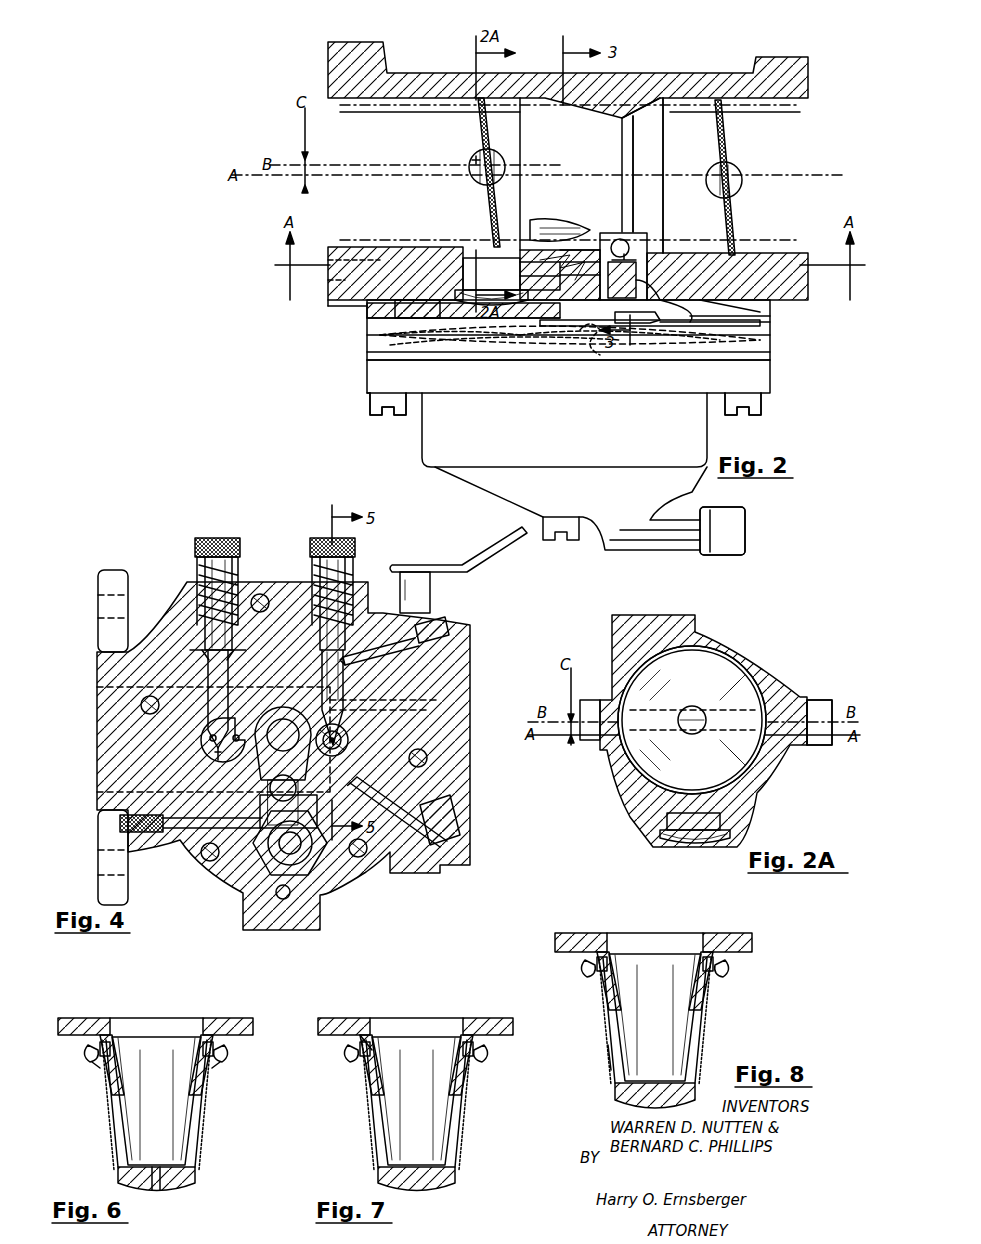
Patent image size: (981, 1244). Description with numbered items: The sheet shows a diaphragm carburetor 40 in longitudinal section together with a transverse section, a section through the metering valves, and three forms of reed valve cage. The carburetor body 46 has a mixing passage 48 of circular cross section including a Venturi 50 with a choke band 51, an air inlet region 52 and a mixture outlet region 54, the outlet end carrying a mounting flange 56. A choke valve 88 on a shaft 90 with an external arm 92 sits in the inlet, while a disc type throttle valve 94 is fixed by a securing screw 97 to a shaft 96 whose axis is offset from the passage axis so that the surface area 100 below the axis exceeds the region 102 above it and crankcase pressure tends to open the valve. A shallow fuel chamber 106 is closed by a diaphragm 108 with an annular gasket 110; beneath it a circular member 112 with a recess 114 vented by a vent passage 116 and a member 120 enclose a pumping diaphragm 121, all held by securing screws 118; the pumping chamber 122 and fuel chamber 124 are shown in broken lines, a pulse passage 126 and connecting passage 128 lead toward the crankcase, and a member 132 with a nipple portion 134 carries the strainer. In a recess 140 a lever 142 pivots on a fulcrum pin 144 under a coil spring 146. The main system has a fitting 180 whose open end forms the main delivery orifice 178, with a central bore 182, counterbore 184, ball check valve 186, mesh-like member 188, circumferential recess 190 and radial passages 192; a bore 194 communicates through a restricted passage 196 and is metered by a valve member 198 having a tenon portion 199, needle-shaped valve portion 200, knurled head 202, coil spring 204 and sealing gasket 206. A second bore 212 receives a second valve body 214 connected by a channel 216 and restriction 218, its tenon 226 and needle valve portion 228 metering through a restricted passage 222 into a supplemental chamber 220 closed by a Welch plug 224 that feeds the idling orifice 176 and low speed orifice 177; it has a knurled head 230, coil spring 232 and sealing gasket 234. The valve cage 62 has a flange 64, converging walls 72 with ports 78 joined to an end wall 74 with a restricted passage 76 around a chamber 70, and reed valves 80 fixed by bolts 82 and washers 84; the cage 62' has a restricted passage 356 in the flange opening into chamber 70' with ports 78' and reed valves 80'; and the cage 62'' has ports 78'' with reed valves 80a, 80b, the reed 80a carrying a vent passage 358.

In FIG. 2, the carburetor 40 is at (632, 62).
In FIG. 2, the carburetor body 46 is at (753, 65).
In FIG. 4, the carburetor body 46 is at (228, 890).
In FIG. 2A, the carburetor body 46 is at (670, 612).
In FIG. 2, the mixing passage 48 is at (608, 156).
In FIG. 2, the Venturi 50 is at (628, 135).
In FIG. 2, the choke band 51 is at (632, 160).
In FIG. 2, the air inlet region 52 is at (790, 136).
In FIG. 2, the mixture outlet region 54 is at (371, 152).
In FIG. 2, the mounting flange 56 is at (387, 58).
In FIG. 2, the choke valve 88 is at (738, 206).
In FIG. 2, the choke shaft 90 is at (740, 172).
In FIG. 4, the arm 92 is at (480, 548).
In FIG. 2, the throttle valve 94 is at (480, 133).
In FIG. 2A, the throttle valve 94 is at (760, 676).
In FIG. 2, the throttle shaft 96 is at (489, 160).
In FIG. 2A, the throttle shaft 96 is at (832, 700).
In FIG. 2, the securing screw 97 is at (470, 150).
In FIG. 2A, the securing screw 97 is at (697, 710).
In FIG. 2A, the surface area 100 is at (702, 783).
In FIG. 2A, the region 102 is at (708, 681).
In FIG. 2, the fuel chamber 106 is at (768, 308).
In FIG. 2, the diaphragm 108 is at (775, 328).
In FIG. 2, the annular gasket 110 is at (395, 310).
In FIG. 2, the circular member 112 is at (360, 320).
In FIG. 2, the central circular recess 114 is at (650, 325).
In FIG. 2, the vent passage 116 is at (760, 318).
In FIG. 2, the securing screws 118 is at (375, 412).
In FIG. 4, the securing screws 118 is at (362, 857).
In FIG. 2, the member 120 is at (362, 396).
In FIG. 2, the pumping diaphragm 121 is at (748, 358).
In FIG. 2, the pumping chamber 122 is at (490, 345).
In FIG. 2, the fuel chamber 124 is at (520, 360).
In FIG. 2, the pulse passage 126 is at (395, 340).
In FIG. 2, the connecting passage 128 is at (335, 282).
In FIG. 2, the member 132 is at (700, 483).
In FIG. 2, the nipple portion 134 is at (748, 535).
In FIG. 2, the recess 140 is at (600, 212).
In FIG. 4, the lever 142 is at (215, 832).
In FIG. 4, the fulcrum pin 144 is at (200, 830).
In FIG. 2, the coil spring 146 is at (580, 330).
In FIG. 2, the idling orifice 176 is at (480, 260).
In FIG. 4, the idling orifice 176 is at (230, 748).
In FIG. 2A, the idling orifice 176 is at (700, 812).
In FIG. 2, the low speed orifice 177 is at (528, 262).
In FIG. 4, the low speed orifice 177 is at (205, 738).
In FIG. 2, the main delivery orifice 178 is at (625, 230).
In FIG. 2, the fitting 180 is at (640, 252).
In FIG. 4, the fitting 180 is at (360, 783).
In FIG. 2, the central bore 182 is at (660, 300).
In FIG. 2, the counterbore 184 is at (626, 242).
In FIG. 2, the ball check valve 186 is at (632, 262).
In FIG. 2, the mesh-like member 188 is at (615, 235).
In FIG. 2, the circumferential recess 190 is at (648, 270).
In FIG. 4, the circumferential recess 190 is at (440, 690).
In FIG. 2, the radially arranged passages 192 is at (700, 326).
In FIG. 4, the radially arranged passages 192 is at (350, 740).
In FIG. 4, the bore 194 is at (447, 626).
In FIG. 4, the restricted passage 196 is at (420, 660).
In FIG. 4, the valve member 198 is at (322, 640).
In FIG. 4, the tenon portion 199 is at (400, 620).
In FIG. 4, the needle-shaped valve portion 200 is at (440, 640).
In FIG. 4, the knurled head 202 is at (318, 538).
In FIG. 4, the coil spring 204 is at (316, 600).
In FIG. 4, the sealing gasket 206 is at (372, 580).
In FIG. 4, the bore 212 is at (210, 680).
In FIG. 4, the second valve body 214 is at (205, 645).
In FIG. 4, the channel 216 is at (328, 700).
In FIG. 4, the restriction 218 is at (240, 660).
In FIG. 2, the supplemental chamber 220 is at (492, 270).
In FIG. 4, the supplemental chamber 220 is at (250, 780).
In FIG. 2A, the supplemental chamber 220 is at (670, 820).
In FIG. 4, the restricted passage 222 is at (225, 722).
In FIG. 2, the Welch plug 224 is at (420, 337).
In FIG. 2A, the Welch plug 224 is at (665, 842).
In FIG. 4, the tenon 226 is at (210, 660).
In FIG. 4, the needle valve portion 228 is at (215, 700).
In FIG. 4, the knurled head 230 is at (218, 538).
In FIG. 4, the coil spring 232 is at (200, 560).
In FIG. 4, the sealing gasket 234 is at (207, 600).
In FIG. 6, the valve cage 62 is at (156, 1003).
In FIG. 7, the reed valve cage 62' is at (416, 1003).
In FIG. 8, the reed cage 62'' is at (655, 918).
In FIG. 6, the flange 64 is at (236, 1036).
In FIG. 7, the flange 64 is at (325, 1036).
In FIG. 6, the chamber 70 is at (156, 1101).
In FIG. 7, the chamber 70' is at (416, 1101).
In FIG. 6, the converging walls 72 is at (108, 1075).
In FIG. 6, the end wall 74 is at (175, 1185).
In FIG. 6, the restricted passage 76 is at (156, 1192).
In FIG. 6, the ports 78 is at (150, 1103).
In FIG. 7, the ports 78' is at (412, 1103).
In FIG. 8, the ports 78'' is at (656, 1020).
In FIG. 6, the reed valve 80 is at (150, 1105).
In FIG. 7, the reed valves 80' is at (407, 1121).
In FIG. 8, the reed valve 80a is at (606, 1025).
In FIG. 8, the reed valve 80b is at (700, 1060).
In FIG. 6, the bolts 82 is at (88, 1050).
In FIG. 6, the washer 84 is at (95, 1064).
In FIG. 7, the restricted passage 356 is at (360, 1035).
In FIG. 8, the vent passage 358 is at (608, 1052).